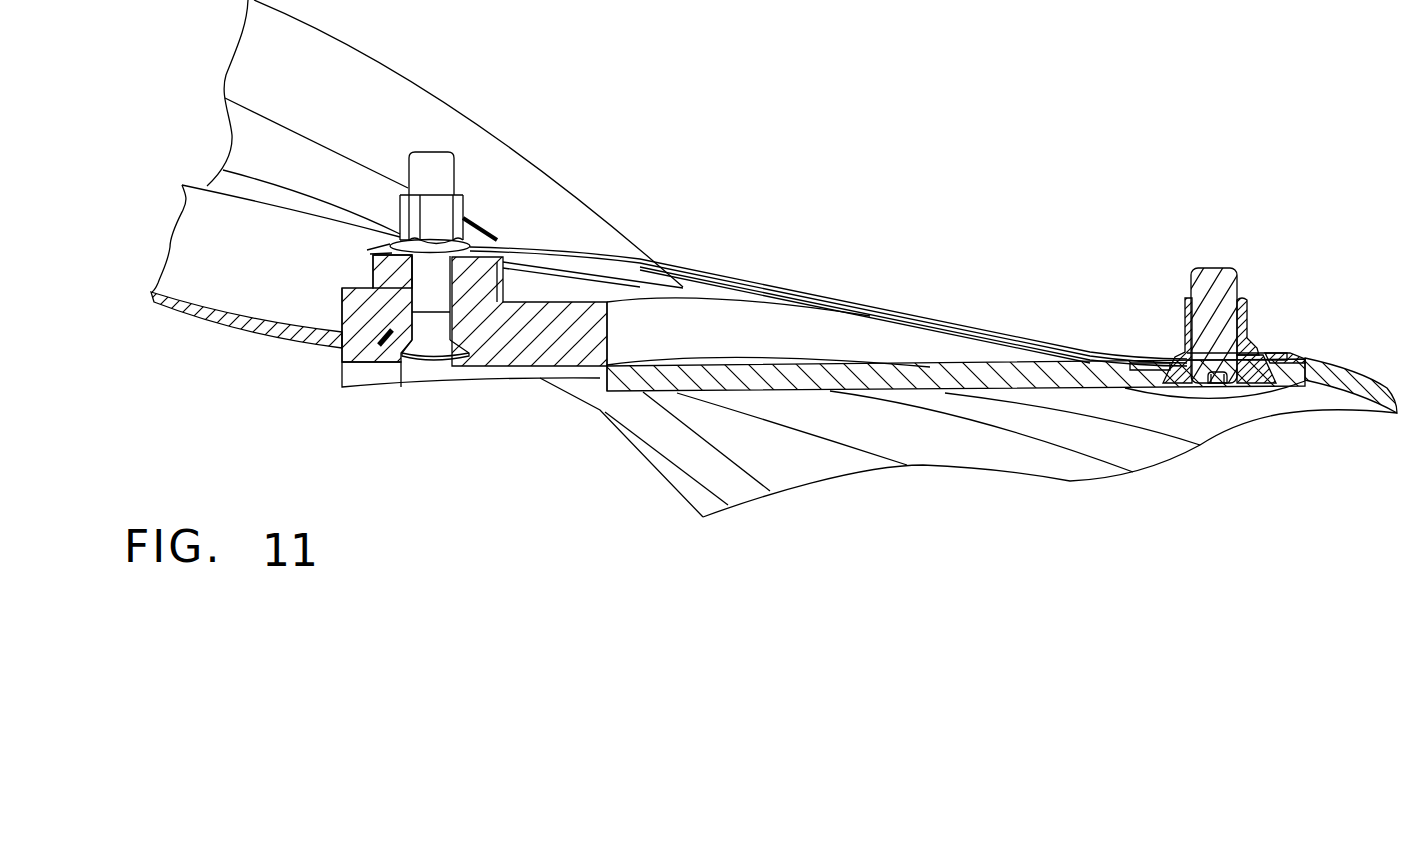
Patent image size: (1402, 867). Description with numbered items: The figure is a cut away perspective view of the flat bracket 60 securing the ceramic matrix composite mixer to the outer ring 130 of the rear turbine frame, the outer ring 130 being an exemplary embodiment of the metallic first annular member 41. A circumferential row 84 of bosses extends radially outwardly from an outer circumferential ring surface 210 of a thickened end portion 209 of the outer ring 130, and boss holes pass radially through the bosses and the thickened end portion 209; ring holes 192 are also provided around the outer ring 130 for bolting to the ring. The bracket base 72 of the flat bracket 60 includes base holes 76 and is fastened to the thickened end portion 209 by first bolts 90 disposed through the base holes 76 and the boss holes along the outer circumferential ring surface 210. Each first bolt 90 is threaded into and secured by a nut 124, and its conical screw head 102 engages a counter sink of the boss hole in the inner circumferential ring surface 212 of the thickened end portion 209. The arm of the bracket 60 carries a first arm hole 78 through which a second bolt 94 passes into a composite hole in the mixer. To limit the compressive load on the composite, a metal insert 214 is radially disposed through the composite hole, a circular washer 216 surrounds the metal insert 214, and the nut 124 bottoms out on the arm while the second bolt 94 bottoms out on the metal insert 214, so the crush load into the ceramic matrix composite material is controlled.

The first annular member 41 is at (1378, 370).
The flat bracket 60 is at (1090, 352).
The bracket base 72 is at (380, 247).
The base holes 76 is at (373, 272).
The first arm hole 78 is at (1185, 327).
The circumferential row 84 is at (347, 373).
The first bolts 90 is at (428, 330).
The second bolts 94 is at (1215, 268).
The conical screw heads 102 is at (417, 358).
The nut 124 is at (463, 217).
The outer ring 130 is at (527, 340).
The ring holes 192 is at (355, 302).
The thickened end portion 209 is at (740, 318).
The outer circumferential ring surface 210 is at (643, 287).
The inner circumferential ring surface 212 is at (527, 368).
The metal insert 214 is at (1266, 356).
The circular washer 216 is at (1155, 385).